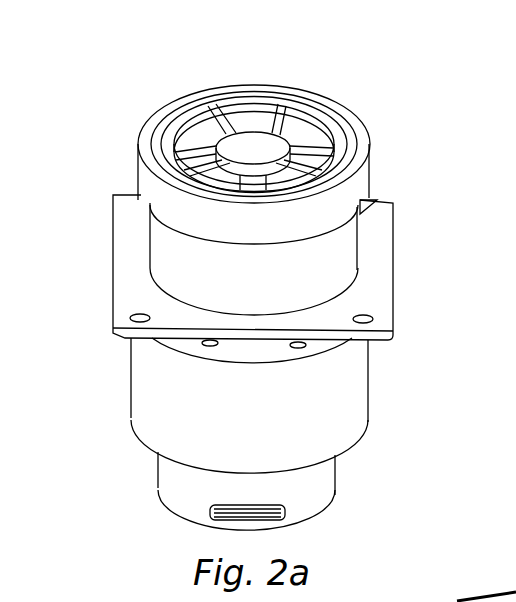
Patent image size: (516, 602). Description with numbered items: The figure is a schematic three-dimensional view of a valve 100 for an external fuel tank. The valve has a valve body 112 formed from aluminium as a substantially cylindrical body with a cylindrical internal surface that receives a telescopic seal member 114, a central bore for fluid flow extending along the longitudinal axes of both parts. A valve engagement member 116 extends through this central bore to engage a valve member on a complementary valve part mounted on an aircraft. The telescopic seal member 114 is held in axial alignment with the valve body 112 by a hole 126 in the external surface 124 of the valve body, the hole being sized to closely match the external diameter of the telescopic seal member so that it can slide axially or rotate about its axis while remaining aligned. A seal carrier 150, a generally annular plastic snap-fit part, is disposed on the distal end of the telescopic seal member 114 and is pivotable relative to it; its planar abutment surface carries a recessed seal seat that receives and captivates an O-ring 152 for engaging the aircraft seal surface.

The valve 100 is at (134, 77).
The valve body 112 is at (335, 400).
The telescopic seal member 114 is at (177, 273).
The valve engagement member 116 is at (232, 137).
The external surface 124 is at (383, 236).
The hole 126 is at (338, 298).
The seal carrier 150 is at (318, 99).
The O-ring 152 is at (355, 136).